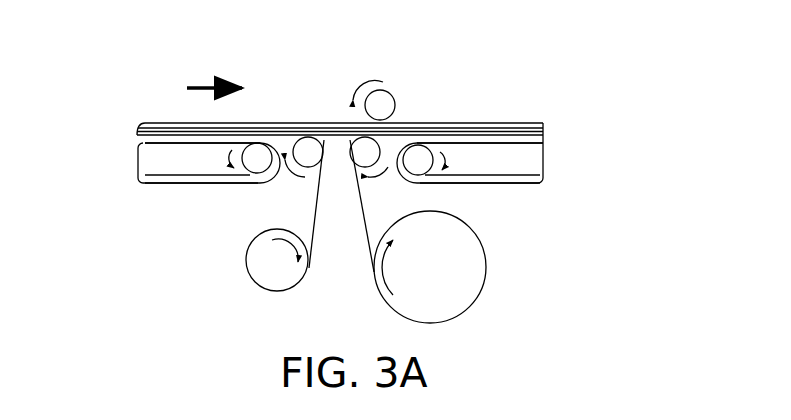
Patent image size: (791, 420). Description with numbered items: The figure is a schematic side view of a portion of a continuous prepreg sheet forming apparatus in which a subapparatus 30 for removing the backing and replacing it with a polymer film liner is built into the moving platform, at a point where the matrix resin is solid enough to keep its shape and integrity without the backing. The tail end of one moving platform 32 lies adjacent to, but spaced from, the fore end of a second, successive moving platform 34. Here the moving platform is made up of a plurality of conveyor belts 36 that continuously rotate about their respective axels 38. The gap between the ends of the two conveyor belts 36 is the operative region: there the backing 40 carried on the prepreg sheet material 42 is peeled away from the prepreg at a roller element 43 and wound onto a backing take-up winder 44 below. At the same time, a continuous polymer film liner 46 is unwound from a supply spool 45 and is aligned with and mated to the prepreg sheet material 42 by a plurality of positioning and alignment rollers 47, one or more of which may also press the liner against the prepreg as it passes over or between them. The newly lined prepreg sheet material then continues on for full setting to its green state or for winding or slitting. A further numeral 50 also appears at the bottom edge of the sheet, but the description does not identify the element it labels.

The subapparatus 30 is at (505, 88).
The moving platform 32 is at (186, 196).
The second moving platform 34 is at (512, 212).
The conveyor belts 36 is at (150, 184).
The axels 38 is at (257, 172).
The backing 40 is at (139, 143).
The prepreg sheet material 42 is at (150, 130).
The roller element 43 is at (312, 152).
The backing take-up winder 44 is at (276, 292).
The supply spool 45 is at (483, 286).
The polymer film liner 46 is at (520, 128).
The positioning and alignment rollers 47 is at (360, 150).
The lower component 50 is at (421, 411).